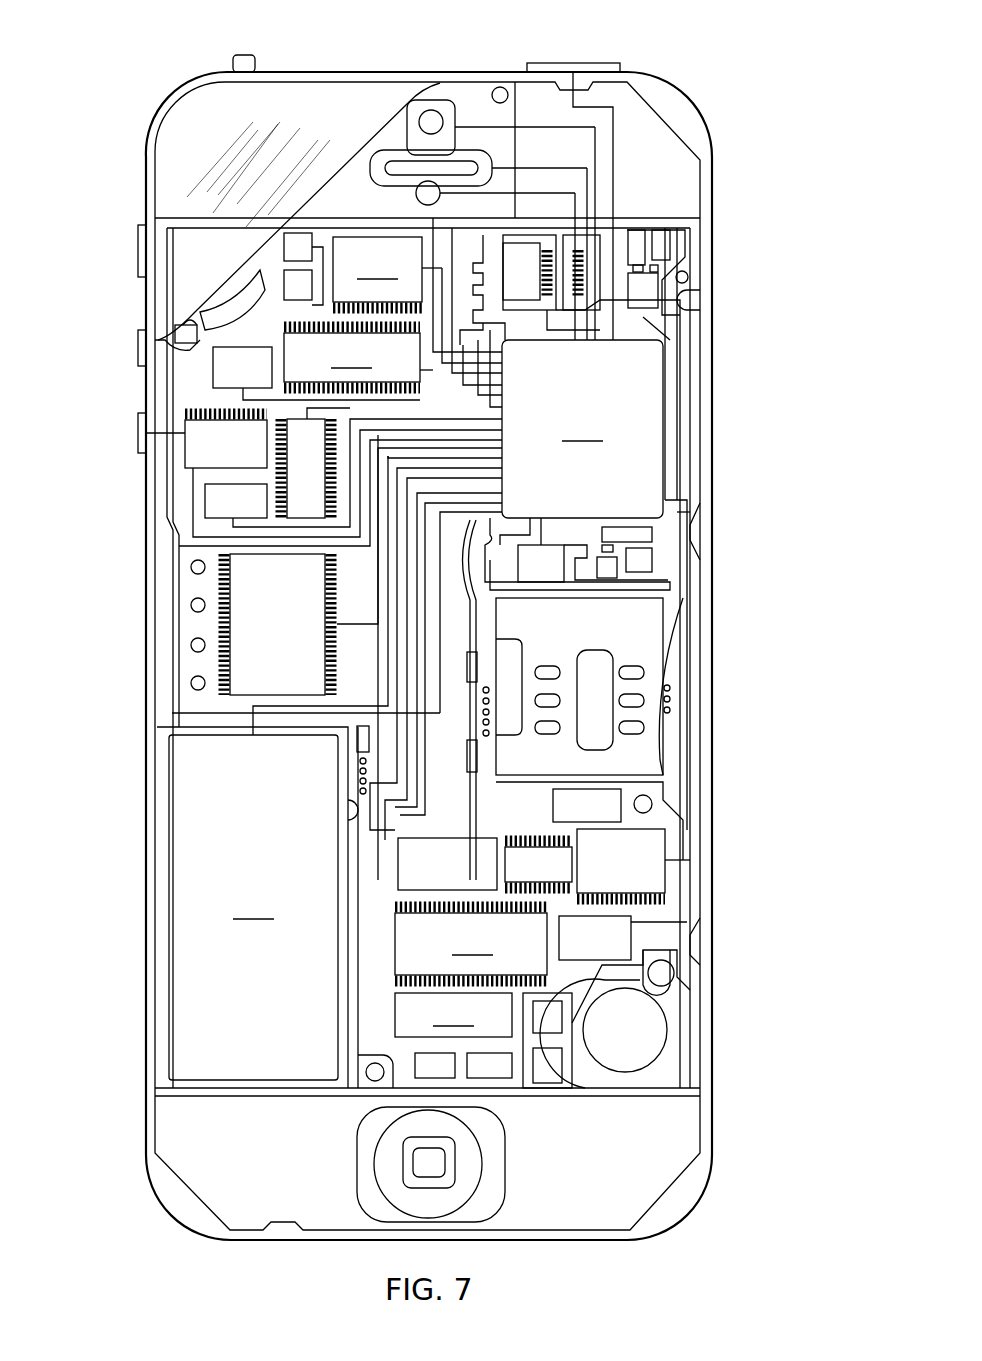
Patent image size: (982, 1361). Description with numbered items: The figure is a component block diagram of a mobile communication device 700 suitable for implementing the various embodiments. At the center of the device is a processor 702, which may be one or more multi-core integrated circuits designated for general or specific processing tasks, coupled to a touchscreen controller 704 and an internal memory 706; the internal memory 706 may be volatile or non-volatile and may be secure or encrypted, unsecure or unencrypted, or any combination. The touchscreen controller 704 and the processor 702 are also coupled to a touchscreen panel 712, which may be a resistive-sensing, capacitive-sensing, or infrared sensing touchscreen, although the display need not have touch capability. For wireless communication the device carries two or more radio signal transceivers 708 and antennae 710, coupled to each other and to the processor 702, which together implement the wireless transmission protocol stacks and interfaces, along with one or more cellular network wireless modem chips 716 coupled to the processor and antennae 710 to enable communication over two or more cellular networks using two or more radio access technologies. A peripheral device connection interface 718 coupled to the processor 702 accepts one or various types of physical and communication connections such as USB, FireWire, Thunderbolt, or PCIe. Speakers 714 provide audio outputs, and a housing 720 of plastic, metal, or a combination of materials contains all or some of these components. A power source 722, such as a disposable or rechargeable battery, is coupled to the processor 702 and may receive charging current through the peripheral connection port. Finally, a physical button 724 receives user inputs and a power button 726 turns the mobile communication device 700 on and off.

The mobile communication device 700 is at (70, 35).
The processor 702 is at (582, 429).
The touchscreen controller 704 is at (377, 272).
The internal memory 706 is at (352, 357).
The radio signal transceivers 708 is at (600, 247).
The antennae 710 is at (663, 288).
The touchscreen panel 712 is at (185, 165).
The speakers 714 is at (380, 150).
The cellular network wireless modem chip 716 is at (471, 944).
The peripheral device connection interface 718 is at (453, 1015).
The housing 720 is at (712, 1120).
The power source 722 is at (253, 907).
The physical button 724 is at (450, 1185).
The power button 726 is at (575, 62).